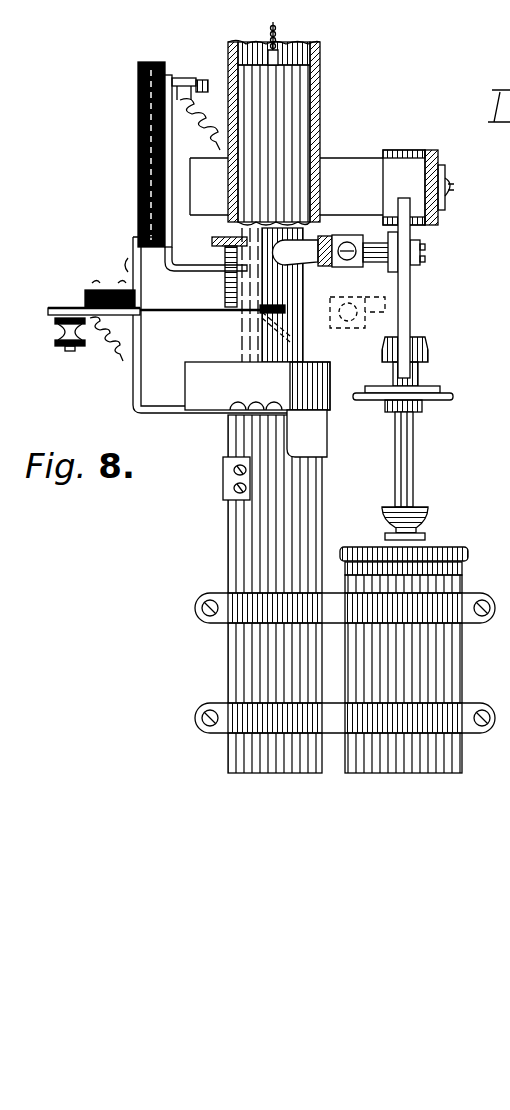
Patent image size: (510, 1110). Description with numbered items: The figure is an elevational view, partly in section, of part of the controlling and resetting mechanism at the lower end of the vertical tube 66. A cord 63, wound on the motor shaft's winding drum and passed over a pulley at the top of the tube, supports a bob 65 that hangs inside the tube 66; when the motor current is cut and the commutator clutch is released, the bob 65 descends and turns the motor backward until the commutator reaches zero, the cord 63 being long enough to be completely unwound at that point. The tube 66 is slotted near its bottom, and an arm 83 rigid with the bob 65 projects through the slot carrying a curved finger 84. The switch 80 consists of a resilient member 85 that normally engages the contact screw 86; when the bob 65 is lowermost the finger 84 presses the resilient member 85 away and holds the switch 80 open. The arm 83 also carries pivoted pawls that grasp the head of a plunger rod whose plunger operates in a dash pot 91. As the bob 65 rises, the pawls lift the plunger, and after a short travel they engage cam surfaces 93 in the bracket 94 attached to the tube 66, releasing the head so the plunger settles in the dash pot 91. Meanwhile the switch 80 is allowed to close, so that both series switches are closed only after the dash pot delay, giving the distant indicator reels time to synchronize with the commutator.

The cord 63 is at (282, 34).
The bob 65 is at (300, 86).
The vertical tube 66 is at (318, 156).
The bracket 94 is at (376, 165).
The cam surfaces 93 is at (425, 158).
The arm 83 is at (405, 248).
The curved finger 84 is at (326, 262).
The contact screw 86 is at (225, 287).
The resilient member 85 is at (205, 312).
The switch 80 is at (226, 318).
The dash pot 91 is at (462, 667).